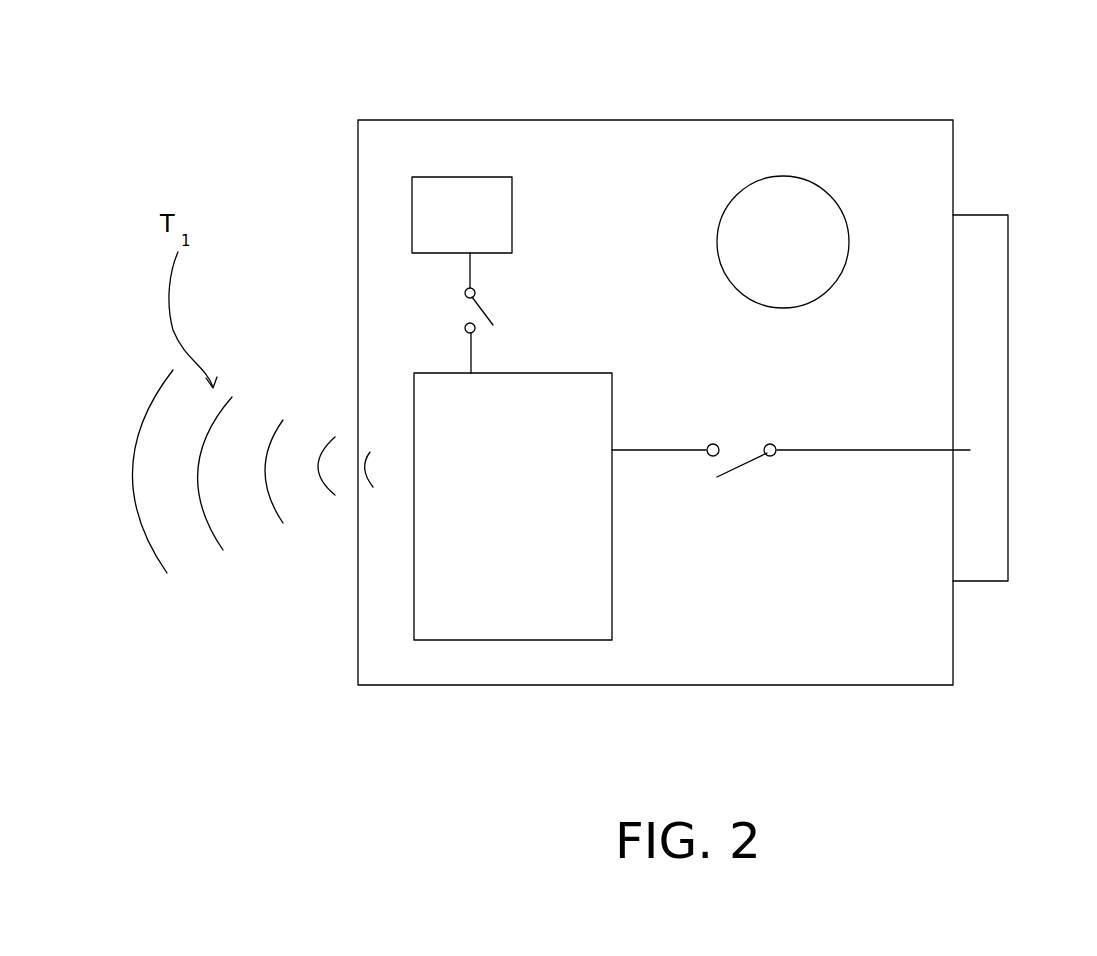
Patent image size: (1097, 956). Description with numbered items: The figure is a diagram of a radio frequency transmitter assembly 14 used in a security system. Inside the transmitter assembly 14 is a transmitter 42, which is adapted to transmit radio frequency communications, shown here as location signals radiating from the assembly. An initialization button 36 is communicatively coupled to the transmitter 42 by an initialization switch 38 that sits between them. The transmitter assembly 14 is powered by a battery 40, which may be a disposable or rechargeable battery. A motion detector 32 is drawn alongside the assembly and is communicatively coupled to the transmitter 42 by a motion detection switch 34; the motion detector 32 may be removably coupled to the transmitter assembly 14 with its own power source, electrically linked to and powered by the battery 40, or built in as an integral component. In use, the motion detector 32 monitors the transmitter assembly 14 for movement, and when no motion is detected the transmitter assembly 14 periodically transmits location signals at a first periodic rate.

The transmitter assembly 14 is at (890, 102).
The motion detector 32 is at (988, 215).
The motion detection switch 34 is at (750, 470).
The initialization button 36 is at (455, 193).
The initialization switch 38 is at (486, 307).
The battery 40 is at (773, 177).
The transmitter 42 is at (495, 640).